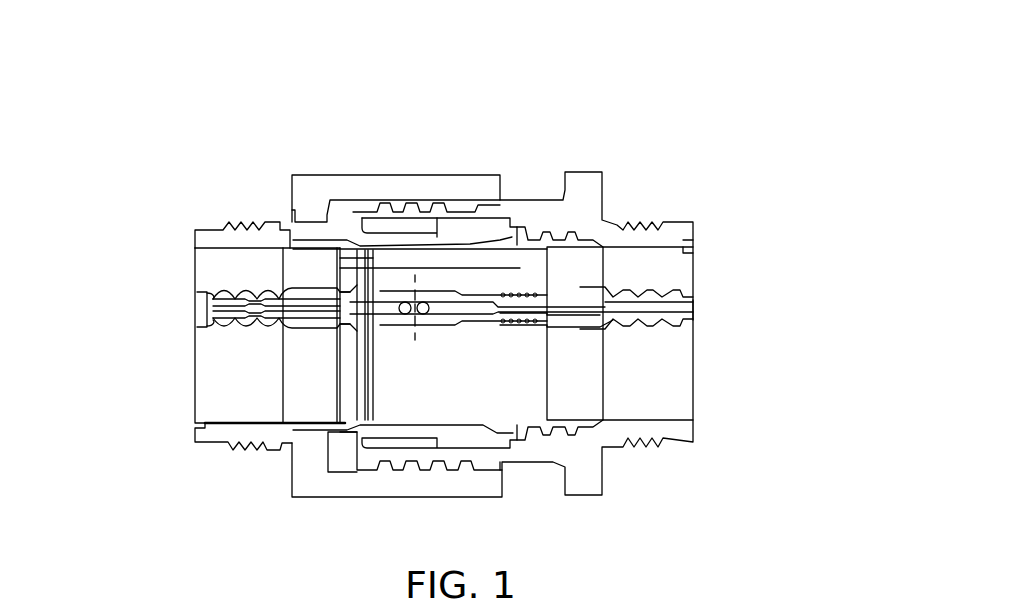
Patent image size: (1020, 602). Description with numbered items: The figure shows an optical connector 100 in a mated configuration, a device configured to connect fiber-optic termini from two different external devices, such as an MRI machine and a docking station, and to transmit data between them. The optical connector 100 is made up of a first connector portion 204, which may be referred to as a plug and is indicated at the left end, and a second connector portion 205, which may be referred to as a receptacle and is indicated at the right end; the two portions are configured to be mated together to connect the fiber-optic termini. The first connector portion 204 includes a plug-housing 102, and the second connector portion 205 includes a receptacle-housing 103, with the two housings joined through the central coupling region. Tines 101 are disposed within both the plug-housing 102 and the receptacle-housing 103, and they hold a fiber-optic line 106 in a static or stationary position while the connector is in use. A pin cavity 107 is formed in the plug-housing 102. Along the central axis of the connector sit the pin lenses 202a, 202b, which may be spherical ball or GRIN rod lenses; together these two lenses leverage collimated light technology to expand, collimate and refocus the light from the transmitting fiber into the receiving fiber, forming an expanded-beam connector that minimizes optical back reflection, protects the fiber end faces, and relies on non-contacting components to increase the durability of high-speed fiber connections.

The optical connector 100 is at (521, 99).
The tines 101 is at (310, 288).
The plug-housing 102 is at (233, 393).
The receptacle-housing 103 is at (660, 377).
The fiber-optic line 106 is at (357, 285).
The pin cavity 107 is at (290, 288).
The pin lens 202a is at (404, 315).
The pin lens 202b is at (427, 316).
The first connector portion 204 is at (190, 320).
The second connector portion 205 is at (722, 289).